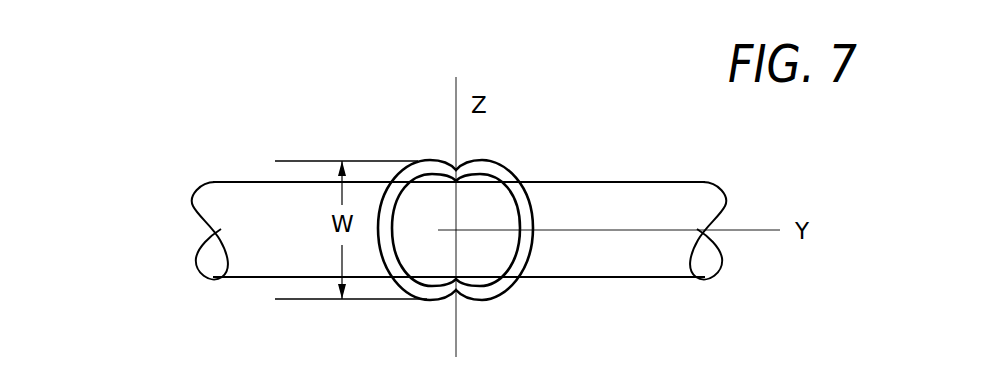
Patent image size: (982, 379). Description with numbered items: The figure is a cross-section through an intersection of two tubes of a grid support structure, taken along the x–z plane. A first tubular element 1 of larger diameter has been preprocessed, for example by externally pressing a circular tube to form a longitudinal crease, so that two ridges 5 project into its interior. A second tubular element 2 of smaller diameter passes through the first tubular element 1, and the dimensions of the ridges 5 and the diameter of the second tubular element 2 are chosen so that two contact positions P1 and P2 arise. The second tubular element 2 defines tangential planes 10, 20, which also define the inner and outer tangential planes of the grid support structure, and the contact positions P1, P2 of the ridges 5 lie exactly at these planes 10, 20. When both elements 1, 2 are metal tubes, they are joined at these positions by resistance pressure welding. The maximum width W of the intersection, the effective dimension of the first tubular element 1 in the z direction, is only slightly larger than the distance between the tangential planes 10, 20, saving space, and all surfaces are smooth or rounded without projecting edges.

The first tubular element 1 is at (510, 170).
The second tubular element 2 is at (658, 268).
The ridge 5 is at (488, 281).
The tangential plane 10 is at (197, 182).
The tangential plane 20 is at (195, 278).
The contact position P1 is at (481, 204).
The contact position P2 is at (419, 259).